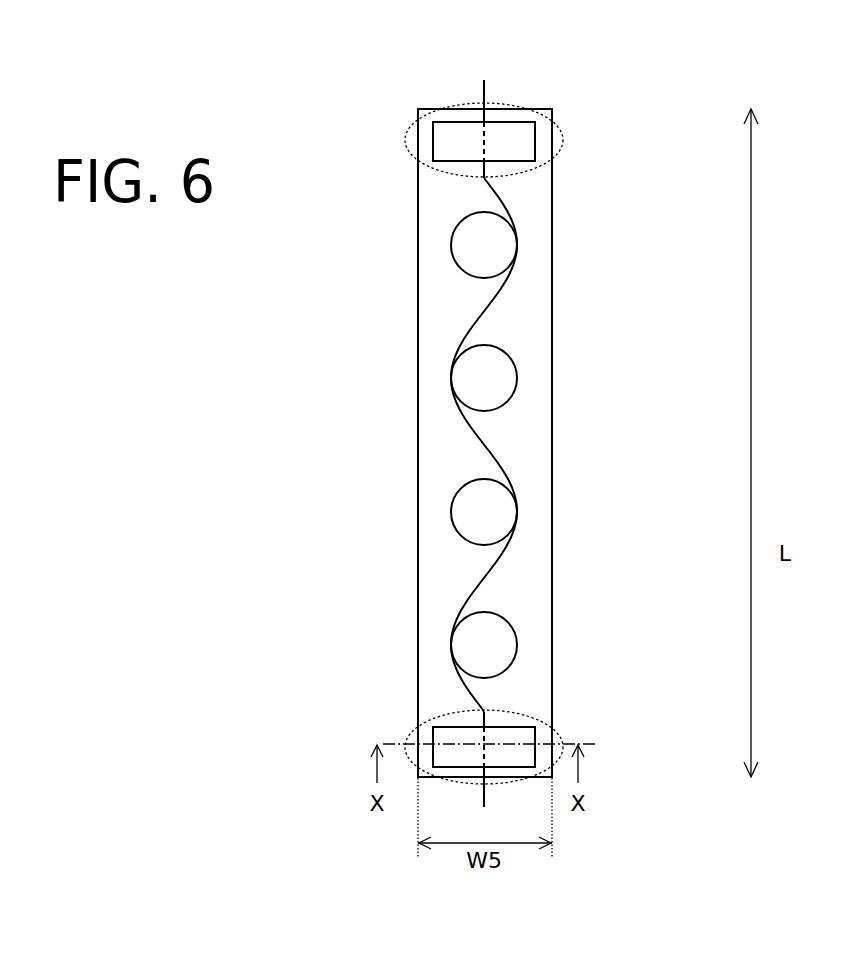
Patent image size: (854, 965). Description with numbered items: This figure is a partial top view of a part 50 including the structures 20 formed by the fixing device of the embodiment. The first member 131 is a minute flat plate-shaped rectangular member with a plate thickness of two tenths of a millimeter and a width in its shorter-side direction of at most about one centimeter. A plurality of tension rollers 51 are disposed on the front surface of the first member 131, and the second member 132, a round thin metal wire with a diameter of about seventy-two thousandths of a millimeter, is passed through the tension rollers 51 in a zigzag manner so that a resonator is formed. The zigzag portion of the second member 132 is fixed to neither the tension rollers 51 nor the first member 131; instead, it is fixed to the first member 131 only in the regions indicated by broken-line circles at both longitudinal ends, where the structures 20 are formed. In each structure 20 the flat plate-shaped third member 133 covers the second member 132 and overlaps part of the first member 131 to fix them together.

The structure 20 is at (513, 110).
The part 50 is at (383, 95).
The tension roller 51 is at (451, 246).
The first member 131 is at (552, 217).
The second member 132 is at (490, 308).
The third member 133 is at (518, 134).